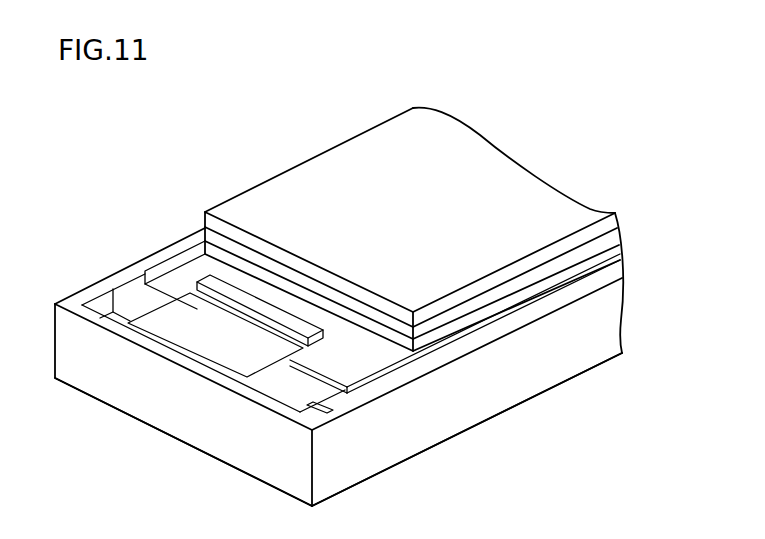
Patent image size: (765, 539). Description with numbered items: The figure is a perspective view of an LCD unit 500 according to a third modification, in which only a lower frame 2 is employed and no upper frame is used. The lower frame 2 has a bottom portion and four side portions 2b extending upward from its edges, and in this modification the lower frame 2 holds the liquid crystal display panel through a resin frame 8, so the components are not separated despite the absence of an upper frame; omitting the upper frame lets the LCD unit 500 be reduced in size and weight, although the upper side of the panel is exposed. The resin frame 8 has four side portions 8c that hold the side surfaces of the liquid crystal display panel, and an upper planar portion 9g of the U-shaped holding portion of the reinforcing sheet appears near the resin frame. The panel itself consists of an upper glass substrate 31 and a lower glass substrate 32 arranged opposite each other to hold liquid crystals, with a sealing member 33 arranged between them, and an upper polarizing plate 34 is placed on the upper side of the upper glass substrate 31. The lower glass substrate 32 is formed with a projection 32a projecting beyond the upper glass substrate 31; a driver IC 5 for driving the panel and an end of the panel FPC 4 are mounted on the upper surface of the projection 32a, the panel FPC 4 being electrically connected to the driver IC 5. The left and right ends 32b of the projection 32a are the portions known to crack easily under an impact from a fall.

The LCD unit 500 is at (231, 146).
The lower frame 2 is at (595, 333).
The side portions 2b is at (212, 425).
The panel FPC 4 is at (213, 345).
The driver IC 5 is at (215, 283).
The resin frame 8 is at (595, 302).
The side portions 8c is at (128, 305).
The upper planar portion 9g is at (320, 400).
The upper glass substrate 31 is at (608, 233).
The lower glass substrate 32 is at (612, 268).
The projection 32a is at (330, 352).
The left and right ends 32b is at (170, 285).
The sealing member 33 is at (612, 252).
The upper polarizing plate 34 is at (281, 190).